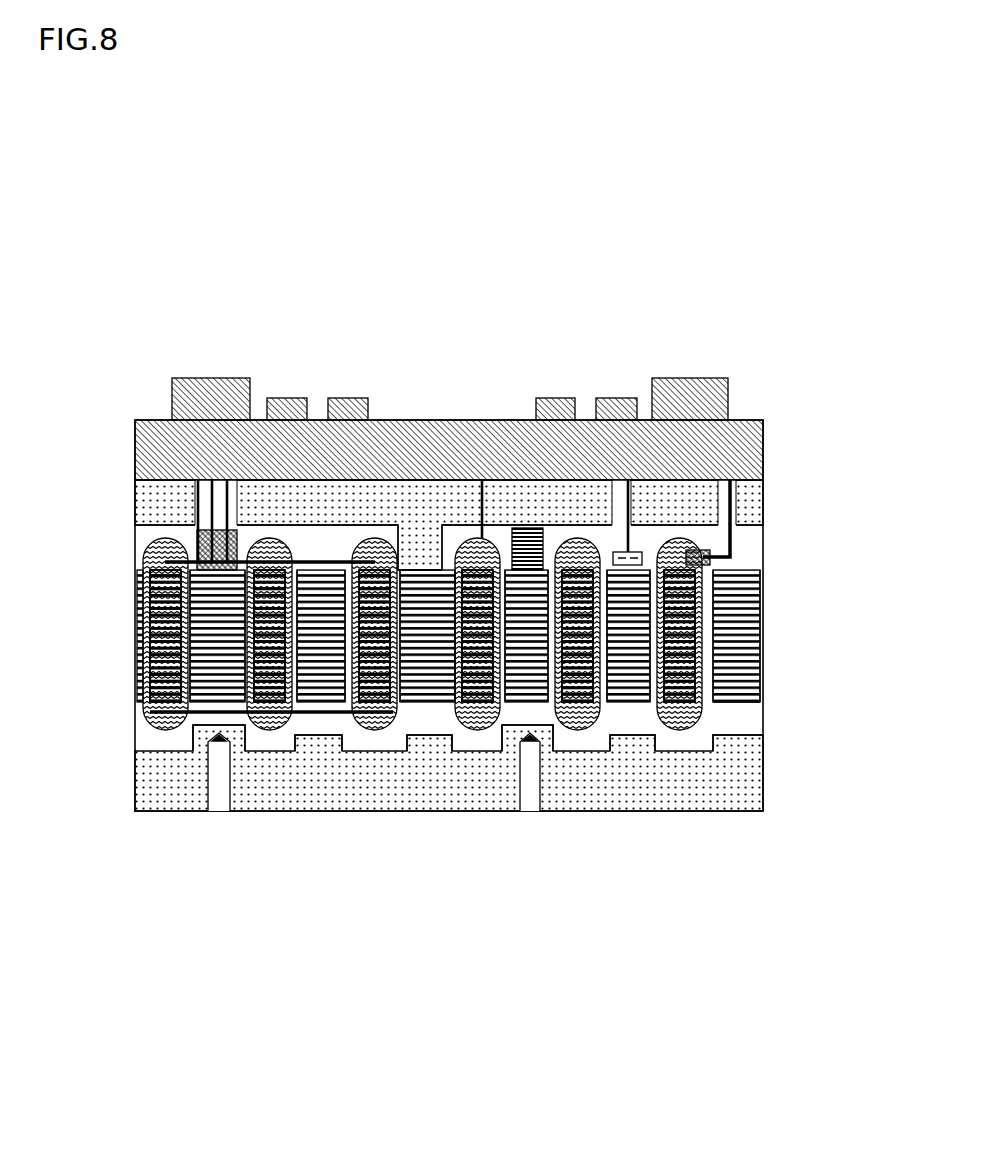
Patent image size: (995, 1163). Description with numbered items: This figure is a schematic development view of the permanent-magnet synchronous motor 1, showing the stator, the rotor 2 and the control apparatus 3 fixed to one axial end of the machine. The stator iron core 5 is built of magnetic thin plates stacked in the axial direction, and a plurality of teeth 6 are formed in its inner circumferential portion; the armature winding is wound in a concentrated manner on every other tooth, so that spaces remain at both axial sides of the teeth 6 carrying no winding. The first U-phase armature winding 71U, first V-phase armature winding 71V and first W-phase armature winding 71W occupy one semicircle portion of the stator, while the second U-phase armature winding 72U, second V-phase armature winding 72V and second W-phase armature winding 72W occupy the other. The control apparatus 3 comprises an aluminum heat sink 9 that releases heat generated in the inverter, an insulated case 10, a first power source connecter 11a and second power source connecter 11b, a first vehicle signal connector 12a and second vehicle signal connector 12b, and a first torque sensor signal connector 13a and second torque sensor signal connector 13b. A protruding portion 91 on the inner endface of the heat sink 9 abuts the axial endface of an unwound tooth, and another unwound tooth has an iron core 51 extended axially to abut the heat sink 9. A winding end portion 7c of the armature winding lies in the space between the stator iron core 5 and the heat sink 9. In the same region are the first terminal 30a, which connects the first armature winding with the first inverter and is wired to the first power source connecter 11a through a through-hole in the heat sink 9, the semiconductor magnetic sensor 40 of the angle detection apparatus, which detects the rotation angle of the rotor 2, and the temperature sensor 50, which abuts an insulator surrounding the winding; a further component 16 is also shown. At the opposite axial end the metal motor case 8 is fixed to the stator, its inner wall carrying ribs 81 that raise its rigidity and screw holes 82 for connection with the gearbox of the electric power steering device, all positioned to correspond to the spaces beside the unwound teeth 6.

The motor 1 is at (141, 369).
The stator unit 2 is at (113, 533).
The control apparatus 3 is at (113, 383).
The stator iron core 5 is at (764, 620).
The teeth 6 is at (733, 683).
The winding end portion 7c is at (482, 500).
The motor case 8 is at (752, 790).
The heat sink 9 is at (765, 522).
The insulated case 10 is at (768, 418).
The first power source connecter 11a is at (350, 398).
The second power source connecter 11b is at (560, 398).
The first vehicle signal connector 12a is at (293, 398).
The second vehicle signal connector 12b is at (613, 398).
The first torque sensor signal connector 13a is at (197, 388).
The second torque sensor signal connector 13b is at (689, 392).
The connecting conductor 16 is at (315, 714).
The first terminal 30a is at (235, 556).
The semiconductor magnetic sensor 40 is at (645, 550).
The temperature sensor 50 is at (715, 558).
The iron core 51 is at (528, 555).
The first U-phase armature winding 71U is at (165, 730).
The first V-phase armature winding 71V is at (270, 730).
The first W-phase armature winding 71W is at (377, 730).
The second U-phase armature winding 72U is at (477, 728).
The second V-phase armature winding 72V is at (575, 730).
The second W-phase armature winding 72W is at (680, 730).
The ribs 81 is at (632, 748).
The screw holes 82 is at (219, 790).
The protruding portion 91 is at (420, 543).